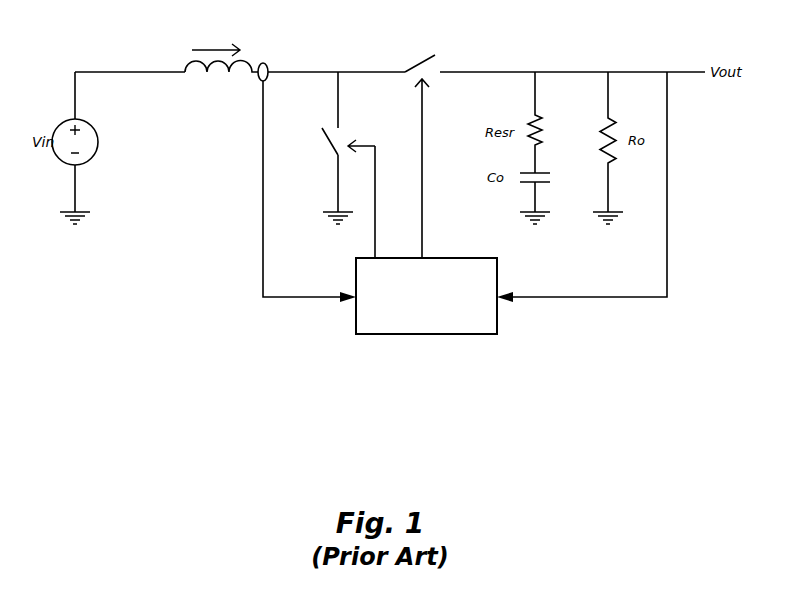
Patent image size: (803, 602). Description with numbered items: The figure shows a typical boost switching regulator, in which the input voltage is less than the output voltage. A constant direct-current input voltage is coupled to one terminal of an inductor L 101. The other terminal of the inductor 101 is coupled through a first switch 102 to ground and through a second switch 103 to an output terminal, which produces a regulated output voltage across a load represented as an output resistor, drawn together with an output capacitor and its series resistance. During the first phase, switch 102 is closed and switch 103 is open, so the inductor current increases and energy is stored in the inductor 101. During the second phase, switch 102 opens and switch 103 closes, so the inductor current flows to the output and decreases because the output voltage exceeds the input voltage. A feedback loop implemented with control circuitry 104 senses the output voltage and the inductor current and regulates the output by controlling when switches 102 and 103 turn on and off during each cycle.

The inductor L 101 is at (201, 110).
The first switch 102 is at (294, 171).
The second switch 103 is at (444, 67).
The control circuitry 104 is at (413, 328).